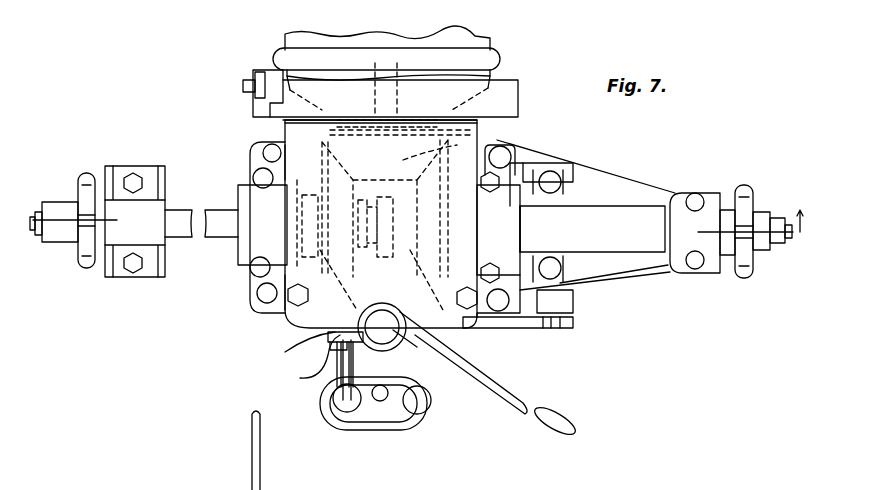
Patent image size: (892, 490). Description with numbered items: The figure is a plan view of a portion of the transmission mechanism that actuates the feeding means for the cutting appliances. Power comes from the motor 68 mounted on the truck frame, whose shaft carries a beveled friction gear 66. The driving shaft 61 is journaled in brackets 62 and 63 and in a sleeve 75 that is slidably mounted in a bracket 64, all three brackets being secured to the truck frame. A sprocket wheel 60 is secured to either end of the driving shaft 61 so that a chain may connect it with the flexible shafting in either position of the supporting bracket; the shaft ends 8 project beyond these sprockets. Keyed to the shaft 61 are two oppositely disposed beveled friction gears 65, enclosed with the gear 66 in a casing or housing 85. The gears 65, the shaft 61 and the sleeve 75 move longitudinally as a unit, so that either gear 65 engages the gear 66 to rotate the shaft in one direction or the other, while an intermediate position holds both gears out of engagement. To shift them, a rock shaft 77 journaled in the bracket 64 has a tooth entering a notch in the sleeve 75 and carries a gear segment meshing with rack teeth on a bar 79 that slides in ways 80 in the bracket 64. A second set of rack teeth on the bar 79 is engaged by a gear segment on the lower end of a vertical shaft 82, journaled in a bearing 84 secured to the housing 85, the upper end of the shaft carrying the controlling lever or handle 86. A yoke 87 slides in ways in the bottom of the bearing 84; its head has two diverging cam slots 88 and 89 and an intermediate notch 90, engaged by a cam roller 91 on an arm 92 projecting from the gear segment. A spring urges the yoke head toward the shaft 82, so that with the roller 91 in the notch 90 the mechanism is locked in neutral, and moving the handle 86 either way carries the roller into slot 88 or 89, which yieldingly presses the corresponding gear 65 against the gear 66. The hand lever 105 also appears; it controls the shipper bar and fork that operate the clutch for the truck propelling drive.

The shaft end 8 is at (416, 216).
The sprocket wheel 60 is at (86, 178).
The driving shaft 61 is at (180, 213).
The bracket 62 is at (148, 272).
The bracket 63 is at (256, 152).
The bracket 64 is at (625, 277).
The beveled friction gear 65 is at (310, 312).
The beveled friction gear 66 is at (477, 140).
The motor 68 is at (473, 63).
The sleeve 75 is at (617, 223).
The rock shaft 77 is at (553, 325).
The bar 79 is at (518, 315).
The ways 80 is at (490, 320).
The vertical shaft 82 is at (378, 340).
The bearing 84 is at (300, 378).
The casing or housing 85 is at (295, 350).
The controlling lever or handle 86 is at (505, 390).
The yoke 87 is at (390, 425).
The cam slot 88 is at (425, 410).
The cam slot 89 is at (348, 405).
The notch 90 is at (380, 402).
The cam roller 91 is at (375, 407).
The arm 92 is at (345, 385).
The hand lever 105 is at (262, 82).